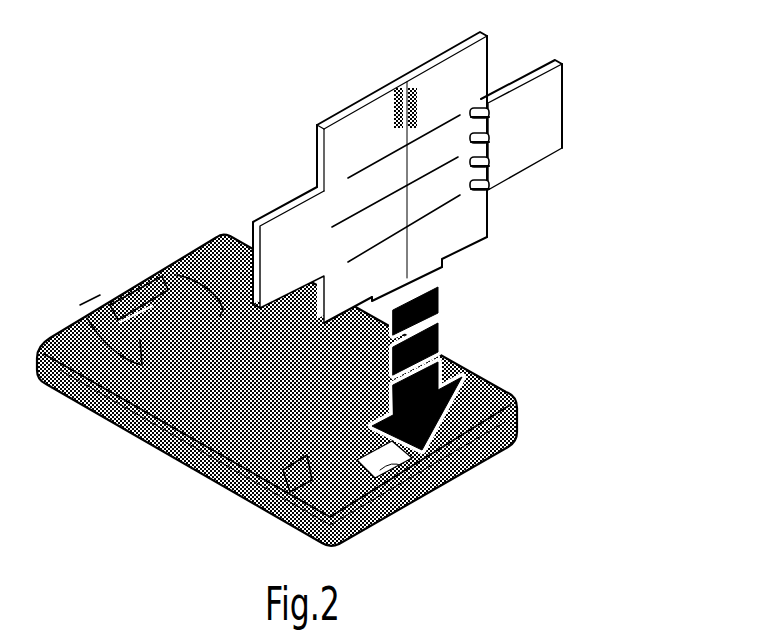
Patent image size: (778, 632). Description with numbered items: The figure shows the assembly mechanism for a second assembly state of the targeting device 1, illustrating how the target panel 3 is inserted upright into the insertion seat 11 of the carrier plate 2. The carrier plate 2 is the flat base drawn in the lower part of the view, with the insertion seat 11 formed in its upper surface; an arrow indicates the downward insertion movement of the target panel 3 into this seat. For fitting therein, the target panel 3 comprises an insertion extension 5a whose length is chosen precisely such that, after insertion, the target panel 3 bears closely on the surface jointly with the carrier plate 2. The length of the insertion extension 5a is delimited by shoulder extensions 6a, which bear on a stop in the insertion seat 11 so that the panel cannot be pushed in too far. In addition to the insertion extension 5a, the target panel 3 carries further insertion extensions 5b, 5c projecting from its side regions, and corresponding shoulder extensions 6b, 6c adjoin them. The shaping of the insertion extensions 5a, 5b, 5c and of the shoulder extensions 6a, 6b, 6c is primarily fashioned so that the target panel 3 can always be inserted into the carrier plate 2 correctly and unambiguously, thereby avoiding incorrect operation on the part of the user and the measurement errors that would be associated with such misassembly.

The targeting device 1 is at (334, 278).
The carrier plate 2 is at (143, 445).
The target panel 3 is at (420, 169).
The insertion extension 5a is at (442, 268).
The insertion extension 5b is at (553, 115).
The insertion extension 5c is at (270, 235).
The shoulder extension 6a is at (468, 233).
The shoulder extension 6b is at (478, 76).
The shoulder extension 6c is at (328, 160).
The insertion seat 11 is at (455, 487).